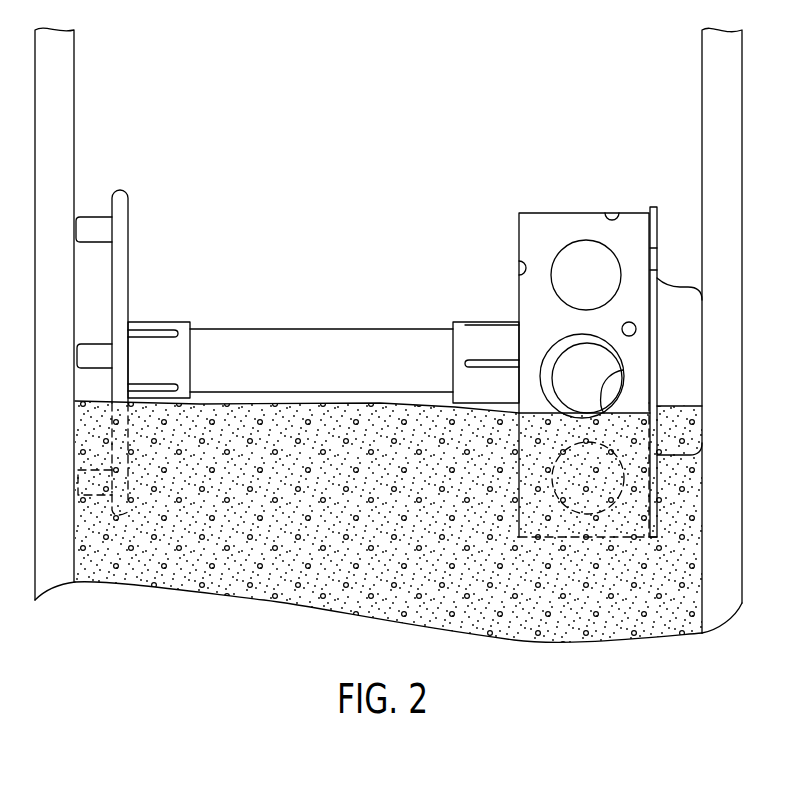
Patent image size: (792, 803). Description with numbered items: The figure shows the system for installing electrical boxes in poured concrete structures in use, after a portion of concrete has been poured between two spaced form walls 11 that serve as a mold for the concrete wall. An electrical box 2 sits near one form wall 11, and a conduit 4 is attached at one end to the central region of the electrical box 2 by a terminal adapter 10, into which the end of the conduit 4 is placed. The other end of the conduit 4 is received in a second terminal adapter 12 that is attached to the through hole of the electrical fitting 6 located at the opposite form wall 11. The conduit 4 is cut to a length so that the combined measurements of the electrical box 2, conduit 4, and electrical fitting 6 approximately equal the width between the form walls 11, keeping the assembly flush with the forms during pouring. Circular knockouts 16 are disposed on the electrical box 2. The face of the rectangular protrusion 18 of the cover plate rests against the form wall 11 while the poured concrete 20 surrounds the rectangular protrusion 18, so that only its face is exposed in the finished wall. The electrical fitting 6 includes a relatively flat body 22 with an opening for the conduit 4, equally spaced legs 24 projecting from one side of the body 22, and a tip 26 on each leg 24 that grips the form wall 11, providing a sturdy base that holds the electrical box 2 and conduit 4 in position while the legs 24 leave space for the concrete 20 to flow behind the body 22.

The electrical box 2 is at (540, 222).
The conduit 4 is at (327, 335).
The electrical fitting 6 is at (130, 272).
The terminal adapter 10 is at (483, 333).
The form walls 11 is at (45, 95).
The second terminal adapter 12 is at (177, 335).
The knockouts 16 is at (590, 248).
The rectangular protrusion 18 is at (688, 352).
The poured concrete 20 is at (650, 627).
The body 22 is at (120, 225).
The legs 24 is at (100, 222).
The tip 26 is at (75, 353).